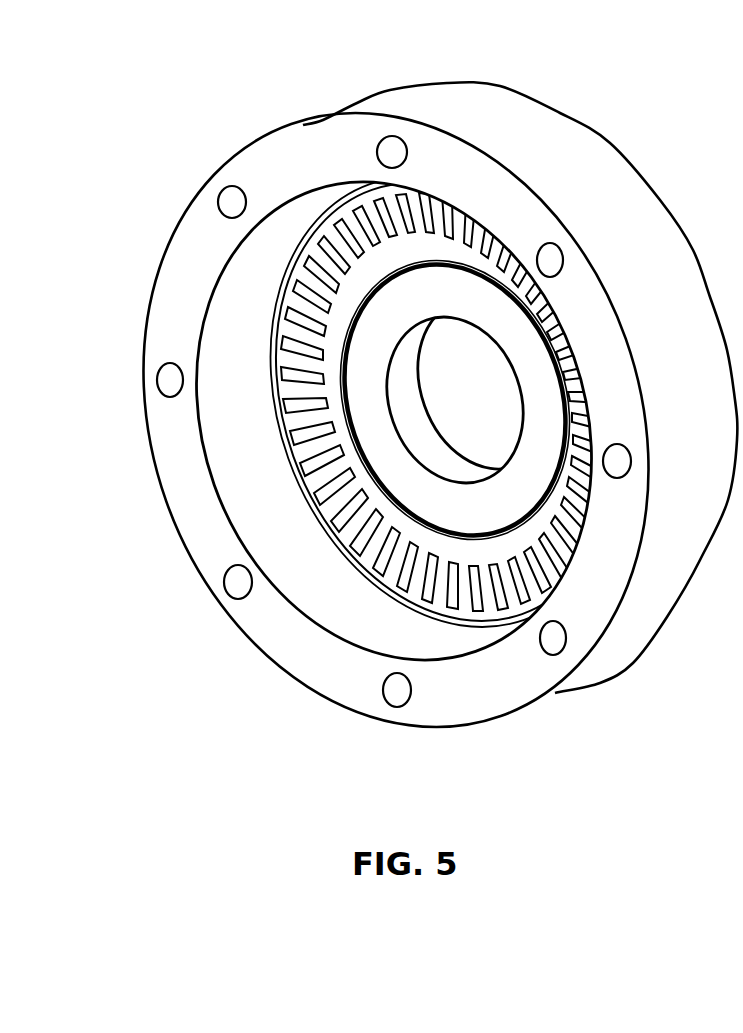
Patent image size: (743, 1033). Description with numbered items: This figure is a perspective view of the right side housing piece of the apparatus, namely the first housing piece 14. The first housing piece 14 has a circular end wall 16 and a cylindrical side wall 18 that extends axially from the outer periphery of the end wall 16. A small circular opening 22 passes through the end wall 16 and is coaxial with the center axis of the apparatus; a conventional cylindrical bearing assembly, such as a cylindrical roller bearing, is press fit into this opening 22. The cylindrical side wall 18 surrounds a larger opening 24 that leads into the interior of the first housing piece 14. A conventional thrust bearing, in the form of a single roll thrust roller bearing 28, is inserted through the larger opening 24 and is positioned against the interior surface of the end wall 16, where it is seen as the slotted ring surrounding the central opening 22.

The first housing piece 14 is at (611, 142).
The circular end wall 16 is at (343, 195).
The cylindrical side wall 18 is at (418, 100).
The small circular opening 22 is at (460, 421).
The larger opening 24 is at (240, 518).
The single roll thrust roller bearing 28 is at (293, 317).